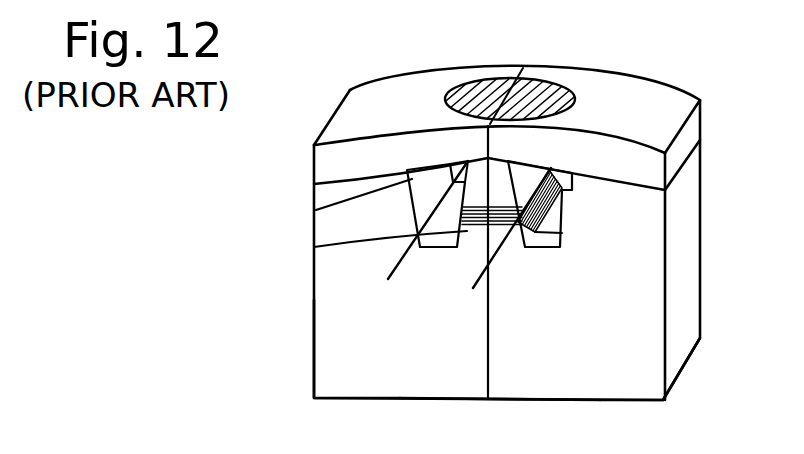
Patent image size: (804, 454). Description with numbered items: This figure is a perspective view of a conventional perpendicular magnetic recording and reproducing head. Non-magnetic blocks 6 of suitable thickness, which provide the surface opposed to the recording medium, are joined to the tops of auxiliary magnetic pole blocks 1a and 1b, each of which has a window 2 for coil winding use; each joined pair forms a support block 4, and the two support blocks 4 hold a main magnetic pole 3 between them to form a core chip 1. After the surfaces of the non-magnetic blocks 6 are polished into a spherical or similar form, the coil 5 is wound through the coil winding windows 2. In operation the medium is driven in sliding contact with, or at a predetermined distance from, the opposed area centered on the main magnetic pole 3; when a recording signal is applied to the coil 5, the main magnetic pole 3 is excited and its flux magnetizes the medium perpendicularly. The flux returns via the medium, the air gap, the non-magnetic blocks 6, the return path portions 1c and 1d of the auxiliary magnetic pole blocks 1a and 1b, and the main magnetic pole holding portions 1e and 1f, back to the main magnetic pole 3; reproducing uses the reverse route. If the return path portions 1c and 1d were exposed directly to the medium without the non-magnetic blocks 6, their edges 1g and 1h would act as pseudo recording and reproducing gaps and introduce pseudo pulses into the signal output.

The core chip 1 is at (724, 302).
The auxiliary magnetic pole block 1a is at (318, 374).
The auxiliary magnetic pole block 1b is at (657, 393).
The return path portion 1c is at (332, 195).
The return path portion 1d is at (650, 202).
The main magnetic pole holding portion 1e is at (317, 255).
The main magnetic pole holding portion 1f is at (562, 233).
The edge of return path portion 1g is at (404, 168).
The edge of return path portion 1h is at (574, 170).
The window for coil winding 2 is at (410, 202).
The main magnetic pole 3 is at (510, 99).
The support block 4 is at (465, 387).
The coil 5 is at (402, 264).
The non-magnetic block 6 is at (316, 168).